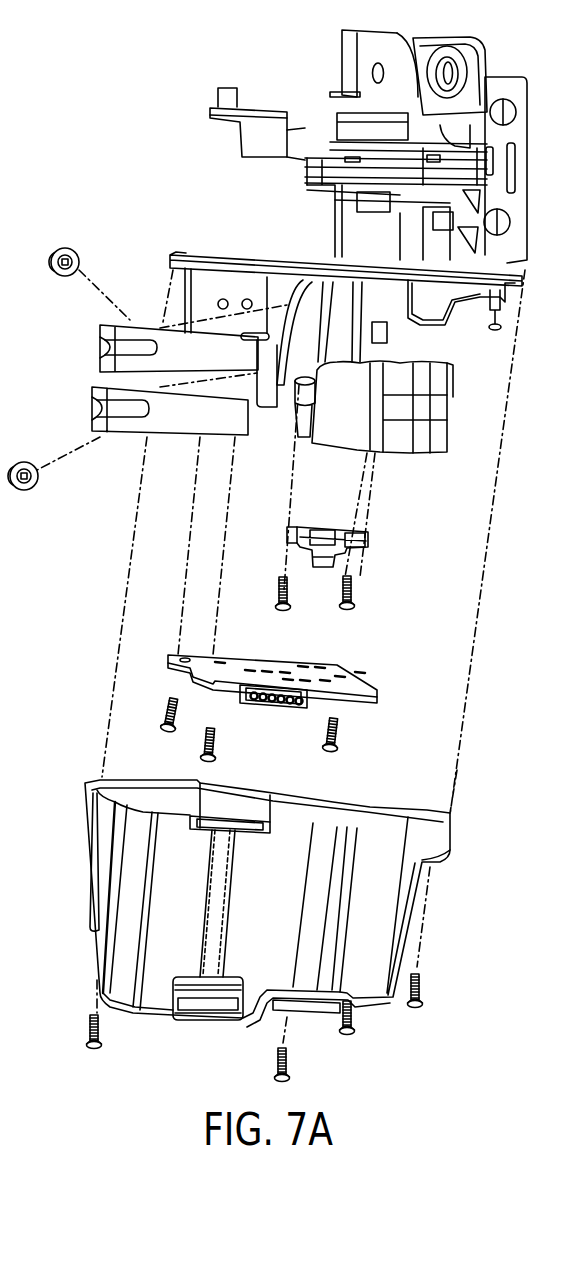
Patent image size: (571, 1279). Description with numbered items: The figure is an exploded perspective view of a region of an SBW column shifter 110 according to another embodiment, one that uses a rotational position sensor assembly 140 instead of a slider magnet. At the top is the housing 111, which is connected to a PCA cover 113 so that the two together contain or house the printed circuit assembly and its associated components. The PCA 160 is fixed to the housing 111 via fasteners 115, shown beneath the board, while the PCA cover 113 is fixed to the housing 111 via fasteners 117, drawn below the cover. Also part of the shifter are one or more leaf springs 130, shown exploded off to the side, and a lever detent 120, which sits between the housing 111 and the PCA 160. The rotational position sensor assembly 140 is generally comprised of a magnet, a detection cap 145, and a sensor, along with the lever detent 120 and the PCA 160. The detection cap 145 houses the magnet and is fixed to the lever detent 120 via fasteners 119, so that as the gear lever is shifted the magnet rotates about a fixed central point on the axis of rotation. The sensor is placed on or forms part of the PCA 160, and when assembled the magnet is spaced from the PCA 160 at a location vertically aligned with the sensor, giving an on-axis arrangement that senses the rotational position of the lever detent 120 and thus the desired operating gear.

The SBW column shifter 110 is at (137, 78).
The housing 111 is at (260, 222).
The PCA cover 113 is at (78, 953).
The fasteners 115 is at (168, 703).
The fasteners 117 is at (82, 1025).
The fasteners 119 is at (285, 598).
The lever detent 120 is at (433, 410).
The leaf springs 130 is at (97, 367).
The rotational position sensor assembly 140 is at (382, 608).
The detection cap 145 is at (370, 537).
The printed circuit assembly (PCA) 160 is at (167, 660).